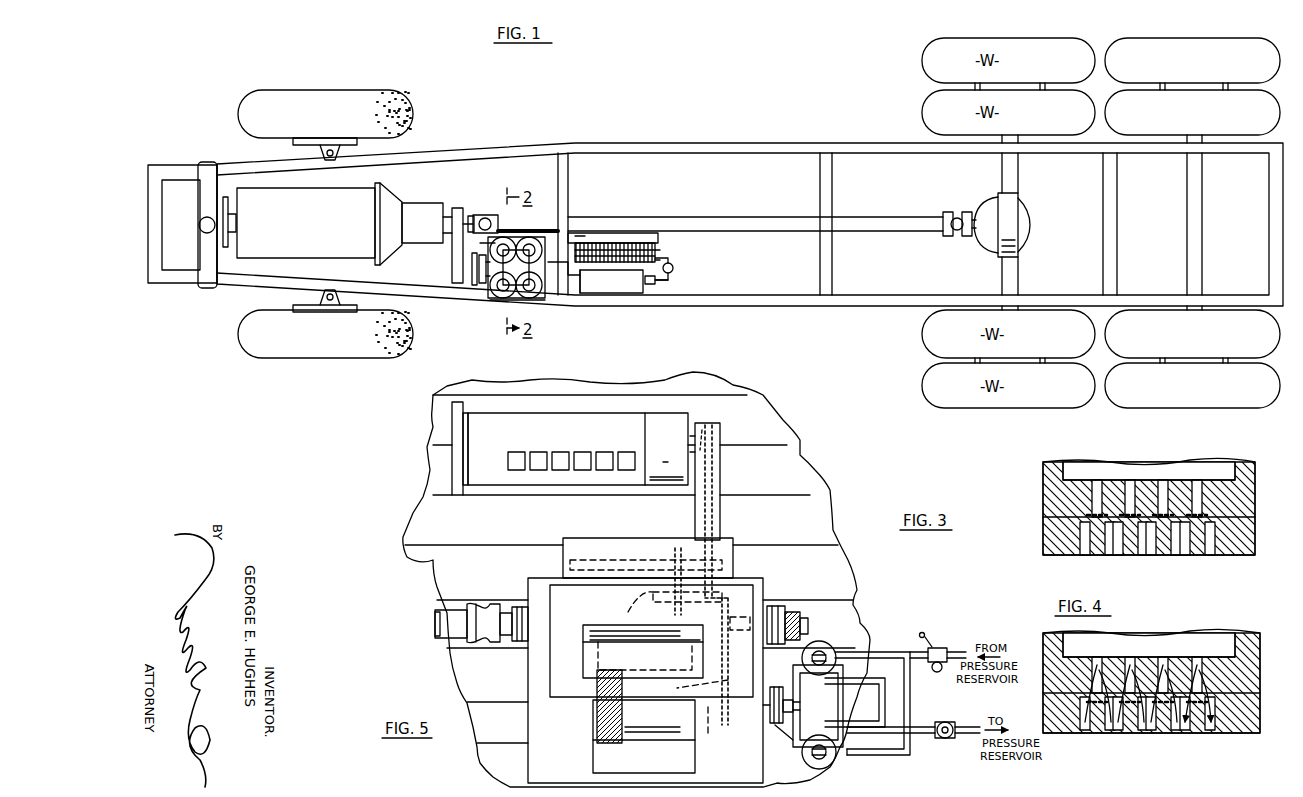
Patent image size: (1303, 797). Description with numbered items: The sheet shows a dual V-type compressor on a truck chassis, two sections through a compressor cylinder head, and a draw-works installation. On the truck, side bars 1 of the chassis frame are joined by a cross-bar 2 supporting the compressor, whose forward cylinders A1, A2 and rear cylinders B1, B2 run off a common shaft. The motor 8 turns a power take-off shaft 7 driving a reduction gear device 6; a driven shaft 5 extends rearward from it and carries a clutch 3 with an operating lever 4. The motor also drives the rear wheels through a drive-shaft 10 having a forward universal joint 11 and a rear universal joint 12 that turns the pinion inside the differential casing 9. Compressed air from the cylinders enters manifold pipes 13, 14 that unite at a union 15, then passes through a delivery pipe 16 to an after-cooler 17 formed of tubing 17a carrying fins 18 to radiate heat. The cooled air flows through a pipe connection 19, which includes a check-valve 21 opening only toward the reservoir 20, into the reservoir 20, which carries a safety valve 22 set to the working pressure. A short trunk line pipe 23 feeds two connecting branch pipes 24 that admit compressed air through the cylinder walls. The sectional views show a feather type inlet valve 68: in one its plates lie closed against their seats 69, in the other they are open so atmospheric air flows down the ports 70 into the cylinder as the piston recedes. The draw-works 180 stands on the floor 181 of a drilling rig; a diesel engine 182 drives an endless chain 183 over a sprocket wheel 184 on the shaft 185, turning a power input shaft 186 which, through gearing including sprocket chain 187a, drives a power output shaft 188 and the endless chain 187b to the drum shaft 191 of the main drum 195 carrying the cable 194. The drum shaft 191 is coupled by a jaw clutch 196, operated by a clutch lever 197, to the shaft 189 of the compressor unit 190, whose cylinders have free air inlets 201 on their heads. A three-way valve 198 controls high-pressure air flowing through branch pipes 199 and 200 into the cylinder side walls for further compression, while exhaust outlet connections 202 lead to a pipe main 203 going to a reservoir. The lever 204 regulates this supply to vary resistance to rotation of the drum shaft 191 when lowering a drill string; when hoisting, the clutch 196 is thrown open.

In FIG. 1, the side bars 1 is at (578, 148).
In FIG. 1, the cross-bar 2 is at (571, 189).
In FIG. 1, the clutch 3 is at (482, 276).
In FIG. 1, the operating lever 4 is at (487, 242).
In FIG. 1, the driven shaft 5 is at (472, 270).
In FIG. 1, the reduction gear device 6 is at (455, 256).
In FIG. 1, the power take-off shaft 7 is at (470, 214).
In FIG. 1, the motor 8 is at (337, 224).
In FIG. 1, the differential casing 9 is at (1016, 228).
In FIG. 1, the drive-shaft 10 is at (746, 218).
In FIG. 1, the universal joint 11 is at (490, 215).
In FIG. 1, the rear universal joint 12 is at (950, 238).
In FIG. 1, the manifold pipe 13 is at (525, 238).
In FIG. 1, the manifold pipe 14 is at (533, 301).
In FIG. 1, the union 15 is at (583, 233).
In FIG. 1, the delivery pipe 16 is at (640, 236).
In FIG. 1, the after-cooler 17 is at (626, 248).
In FIG. 1, the tubing 17a is at (660, 252).
In FIG. 1, the fins 18 is at (651, 262).
In FIG. 1, the pipe connection 19 is at (672, 283).
In FIG. 1, the reservoir 20 is at (620, 294).
In FIG. 1, the check-valve 21 is at (674, 268).
In FIG. 1, the safety valve 22 is at (652, 290).
In FIG. 1, the trunk line pipe 23 is at (572, 296).
In FIG. 1, the connecting branch pipes 24 is at (591, 281).
In FIG. 1, the forward cylinder A1 is at (500, 296).
In FIG. 1, the forward cylinder A2 is at (495, 268).
In FIG. 1, the rear cylinder B1 is at (537, 296).
In FIG. 1, the rear cylinder B2 is at (548, 245).
In FIG. 3, the feather type inlet valve 68 is at (1200, 516).
In FIG. 4, the feather type inlet valve 68 is at (1128, 703).
In FIG. 4, the seats 69 is at (1134, 706).
In FIG. 4, the ports 70 is at (1099, 664).
In FIG. 5, the draw-works 180 is at (575, 688).
In FIG. 5, the floor 181 is at (792, 509).
In FIG. 5, the diesel engine 182 is at (598, 421).
In FIG. 5, the endless chain 183 is at (721, 518).
In FIG. 5, the sprocket wheel 184 is at (713, 436).
In FIG. 5, the shaft 185 is at (708, 430).
In FIG. 5, the power input shaft 186 is at (690, 560).
In FIG. 5, the sprocket chain 187a is at (643, 642).
In FIG. 5, the endless chain 187b is at (722, 683).
In FIG. 5, the power output shaft 188 is at (689, 611).
In FIG. 5, the shaft of the compressor unit 189 is at (775, 740).
In FIG. 5, the compressor unit 190 is at (818, 706).
In FIG. 5, the drum shaft 191 is at (711, 731).
In FIG. 5, the cable 194 is at (620, 751).
In FIG. 5, the main drum 195 is at (644, 736).
In FIG. 5, the jaw clutch 196 is at (777, 713).
In FIG. 5, the clutch lever 197 is at (782, 690).
In FIG. 5, the three-way valve 198 is at (940, 648).
In FIG. 5, the branch pipe 199 is at (888, 652).
In FIG. 5, the branch pipe 200 is at (885, 753).
In FIG. 5, the free air inlet 201 is at (826, 660).
In FIG. 5, the exhaust outlet connections 202 is at (862, 707).
In FIG. 5, the pipe main 203 is at (926, 729).
In FIG. 5, the lever 204 is at (934, 629).